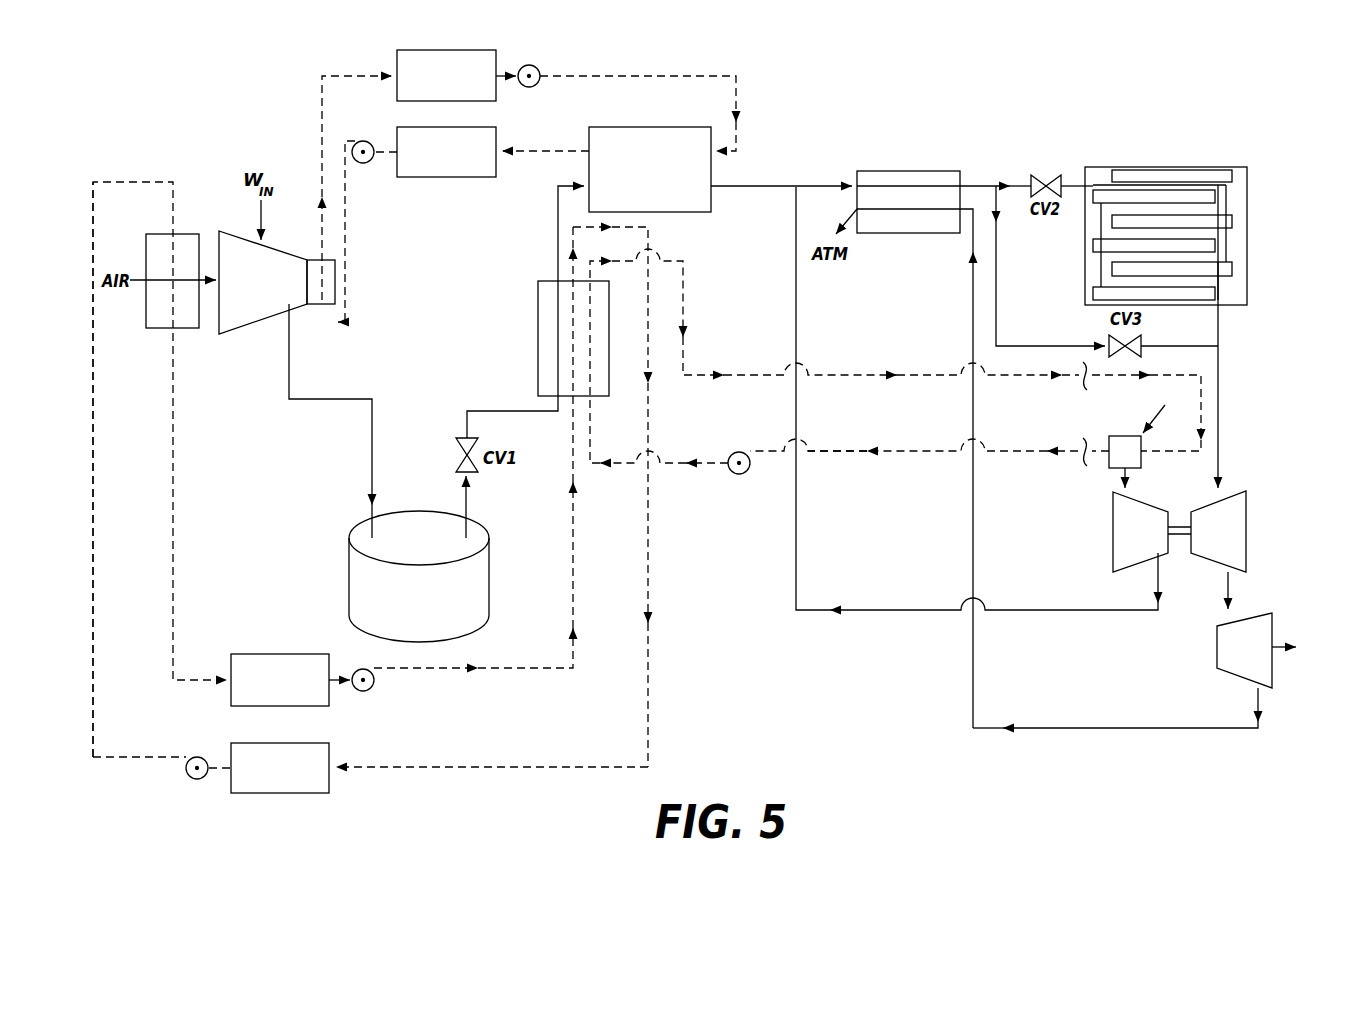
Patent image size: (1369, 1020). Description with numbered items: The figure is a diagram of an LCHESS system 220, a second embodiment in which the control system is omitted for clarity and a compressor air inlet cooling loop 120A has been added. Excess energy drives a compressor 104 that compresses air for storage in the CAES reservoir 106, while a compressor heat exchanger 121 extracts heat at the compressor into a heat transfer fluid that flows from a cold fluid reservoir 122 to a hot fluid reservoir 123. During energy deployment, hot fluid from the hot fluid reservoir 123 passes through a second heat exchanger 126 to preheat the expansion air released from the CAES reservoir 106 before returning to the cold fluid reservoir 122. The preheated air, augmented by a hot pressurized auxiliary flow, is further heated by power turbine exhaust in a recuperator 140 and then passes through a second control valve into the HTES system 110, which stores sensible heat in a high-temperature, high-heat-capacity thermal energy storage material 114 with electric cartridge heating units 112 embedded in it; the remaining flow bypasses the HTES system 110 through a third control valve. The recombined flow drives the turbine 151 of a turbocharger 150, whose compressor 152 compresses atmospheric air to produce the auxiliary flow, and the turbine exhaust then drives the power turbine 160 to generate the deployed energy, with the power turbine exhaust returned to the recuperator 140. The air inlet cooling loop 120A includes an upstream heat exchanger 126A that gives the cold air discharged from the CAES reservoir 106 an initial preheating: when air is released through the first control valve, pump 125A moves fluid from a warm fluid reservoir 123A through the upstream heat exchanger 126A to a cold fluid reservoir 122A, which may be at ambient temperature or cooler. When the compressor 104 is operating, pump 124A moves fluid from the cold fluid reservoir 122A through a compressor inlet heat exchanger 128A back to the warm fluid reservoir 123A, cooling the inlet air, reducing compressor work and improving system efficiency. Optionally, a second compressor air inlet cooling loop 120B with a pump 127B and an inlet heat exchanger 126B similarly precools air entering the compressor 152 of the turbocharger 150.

The LCHESS system 220 is at (160, 105).
The hot fluid reservoir 123 is at (397, 66).
The cold fluid reservoir 122 is at (397, 138).
The second heat exchanger 126 is at (686, 127).
The recuperator 140 is at (872, 171).
The HTES system 110 is at (1103, 163).
The electric cartridge heating units 112 is at (1232, 176).
The thermal energy storage material 114 is at (1240, 197).
The compressor inlet heat exchanger 128A is at (180, 328).
The compressor 104 is at (272, 322).
The compressor heat exchanger 121 is at (312, 305).
The upstream heat exchanger 126A is at (538, 328).
The CAES reservoir 106 is at (349, 563).
The warm fluid reservoir 123A is at (235, 654).
The pump 125A is at (372, 689).
The cold fluid reservoir 122A is at (232, 746).
The pump 124A is at (197, 779).
The compressor air inlet cooling loop 120A is at (147, 765).
The pump 127B is at (739, 474).
The second compressor air inlet cooling loop 120B is at (829, 458).
The inlet heat exchanger 126B is at (1141, 462).
The turbocharger 150 is at (1258, 492).
The compressor 152 is at (1113, 532).
The turbine 151 is at (1246, 560).
The power turbine 160 is at (1272, 680).